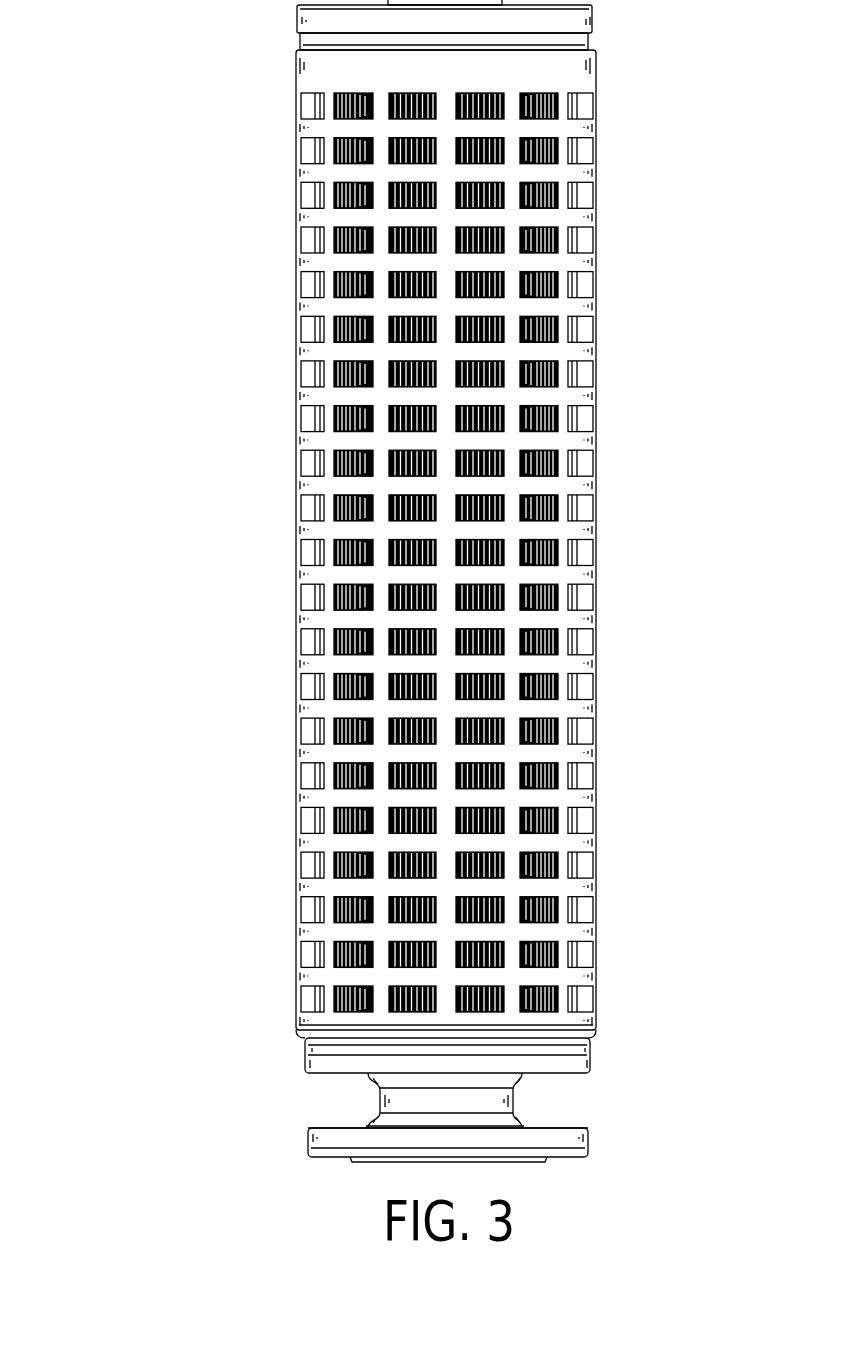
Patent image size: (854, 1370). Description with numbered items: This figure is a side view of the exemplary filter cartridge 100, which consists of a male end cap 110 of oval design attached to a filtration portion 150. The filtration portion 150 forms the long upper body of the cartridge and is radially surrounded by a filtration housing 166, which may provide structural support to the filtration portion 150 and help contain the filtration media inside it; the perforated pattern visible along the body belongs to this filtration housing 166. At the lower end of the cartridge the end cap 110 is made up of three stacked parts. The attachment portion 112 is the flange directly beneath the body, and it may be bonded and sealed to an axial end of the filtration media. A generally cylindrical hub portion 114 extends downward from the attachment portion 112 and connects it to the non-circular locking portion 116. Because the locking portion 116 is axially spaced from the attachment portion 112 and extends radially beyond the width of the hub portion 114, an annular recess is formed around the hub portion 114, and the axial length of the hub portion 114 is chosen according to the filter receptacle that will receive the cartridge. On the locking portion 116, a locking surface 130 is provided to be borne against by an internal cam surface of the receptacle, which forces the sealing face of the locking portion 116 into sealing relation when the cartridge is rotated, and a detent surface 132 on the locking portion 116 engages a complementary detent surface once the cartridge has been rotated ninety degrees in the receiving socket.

The filter cartridge 100 is at (112, 379).
The end cap 110 is at (156, 1167).
The attachment portion 112 is at (613, 1057).
The hub portion 114 is at (532, 1101).
The locking portion 116 is at (602, 1139).
The locking surface 130 is at (333, 1128).
The detent surface 132 is at (317, 1128).
The filtration portion 150 is at (622, 487).
The filtration housing 166 is at (294, 348).